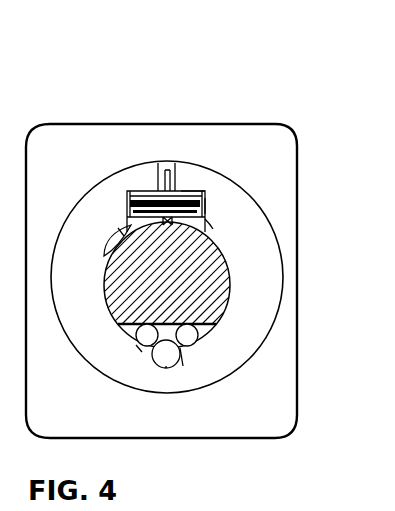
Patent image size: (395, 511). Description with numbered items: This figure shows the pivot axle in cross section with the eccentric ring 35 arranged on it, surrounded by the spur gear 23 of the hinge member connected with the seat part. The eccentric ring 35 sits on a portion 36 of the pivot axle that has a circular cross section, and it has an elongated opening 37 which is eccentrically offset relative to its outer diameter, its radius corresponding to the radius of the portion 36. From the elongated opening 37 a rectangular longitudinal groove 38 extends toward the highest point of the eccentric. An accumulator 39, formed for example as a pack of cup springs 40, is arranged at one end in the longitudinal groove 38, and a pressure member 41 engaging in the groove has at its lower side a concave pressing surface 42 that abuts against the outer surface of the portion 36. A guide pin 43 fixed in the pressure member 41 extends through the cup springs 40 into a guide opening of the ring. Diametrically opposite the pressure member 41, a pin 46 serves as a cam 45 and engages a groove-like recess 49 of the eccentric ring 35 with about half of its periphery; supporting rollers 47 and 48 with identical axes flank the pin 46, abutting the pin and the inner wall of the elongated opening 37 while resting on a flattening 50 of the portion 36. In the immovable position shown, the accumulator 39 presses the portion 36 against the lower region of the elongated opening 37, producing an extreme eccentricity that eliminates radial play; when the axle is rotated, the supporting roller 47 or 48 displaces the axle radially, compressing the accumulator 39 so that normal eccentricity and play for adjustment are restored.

The spur gear 23 is at (228, 145).
The eccentric ring 35 is at (242, 208).
The portion of the pivot axle 36 is at (200, 290).
The elongated opening 37 is at (120, 232).
The longitudinal groove 38 is at (181, 190).
The accumulator 39 is at (212, 203).
The cup springs 40 is at (133, 190).
The pressure member 41 is at (212, 226).
The pressing surface 42 is at (104, 250).
The guide pin 43 is at (166, 163).
The cam 45 is at (189, 384).
The pin 46 is at (163, 367).
The supporting roller 47 is at (139, 353).
The supporting roller 48 is at (197, 346).
The groove-like recess 49 is at (171, 367).
The flattening 50 is at (136, 343).